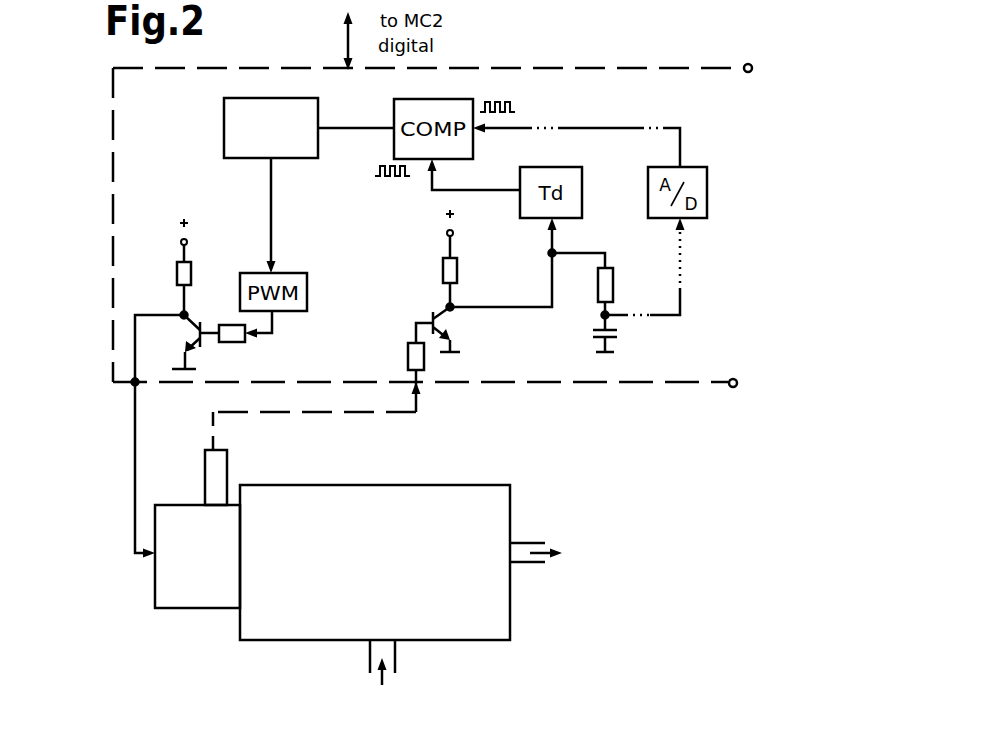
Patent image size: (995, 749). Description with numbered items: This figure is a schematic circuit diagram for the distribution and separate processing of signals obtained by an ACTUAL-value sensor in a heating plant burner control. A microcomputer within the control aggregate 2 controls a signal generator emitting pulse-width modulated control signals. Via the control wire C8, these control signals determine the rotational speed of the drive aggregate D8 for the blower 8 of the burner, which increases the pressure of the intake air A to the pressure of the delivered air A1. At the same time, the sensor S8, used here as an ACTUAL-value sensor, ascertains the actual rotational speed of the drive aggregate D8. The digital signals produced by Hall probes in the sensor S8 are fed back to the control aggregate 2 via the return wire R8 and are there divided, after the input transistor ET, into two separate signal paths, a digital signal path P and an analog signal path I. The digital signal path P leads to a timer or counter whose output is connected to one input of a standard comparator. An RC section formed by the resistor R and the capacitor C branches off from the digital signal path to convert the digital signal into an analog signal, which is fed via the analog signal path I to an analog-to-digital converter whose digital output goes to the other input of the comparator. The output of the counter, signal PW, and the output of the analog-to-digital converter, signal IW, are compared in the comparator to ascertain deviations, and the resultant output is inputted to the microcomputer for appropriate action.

The control aggregate 2 is at (262, 97).
The blower 8 is at (500, 516).
The control wire C8 is at (136, 434).
The sensor S8 is at (215, 466).
The return wire R8 is at (338, 414).
The drive aggregate D8 is at (167, 580).
The input transistor ET is at (446, 290).
The resistor of RC section R is at (620, 293).
The capacitor of RC section C is at (617, 333).
The digital signal path P is at (550, 254).
The analog signal path I is at (682, 291).
The output signal of A/D converter IW is at (530, 126).
The output signal of counter Td PW is at (431, 191).
The intake air A is at (382, 679).
The delivered air A1 is at (552, 559).